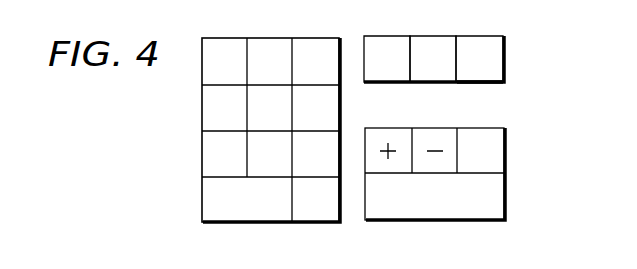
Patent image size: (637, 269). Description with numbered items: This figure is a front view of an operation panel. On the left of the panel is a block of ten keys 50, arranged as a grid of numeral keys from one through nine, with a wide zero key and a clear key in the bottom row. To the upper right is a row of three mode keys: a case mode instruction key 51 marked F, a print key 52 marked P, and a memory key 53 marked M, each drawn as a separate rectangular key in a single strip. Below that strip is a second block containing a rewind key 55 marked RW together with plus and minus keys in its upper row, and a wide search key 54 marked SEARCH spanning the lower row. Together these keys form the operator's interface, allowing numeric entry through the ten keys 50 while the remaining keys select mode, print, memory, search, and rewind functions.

The ten keys 50 is at (255, 223).
The case mode instruction key 51 is at (390, 36).
The print key 52 is at (437, 36).
The memory key 53 is at (481, 36).
The search key 54 is at (433, 221).
The rewind key 55 is at (506, 150).